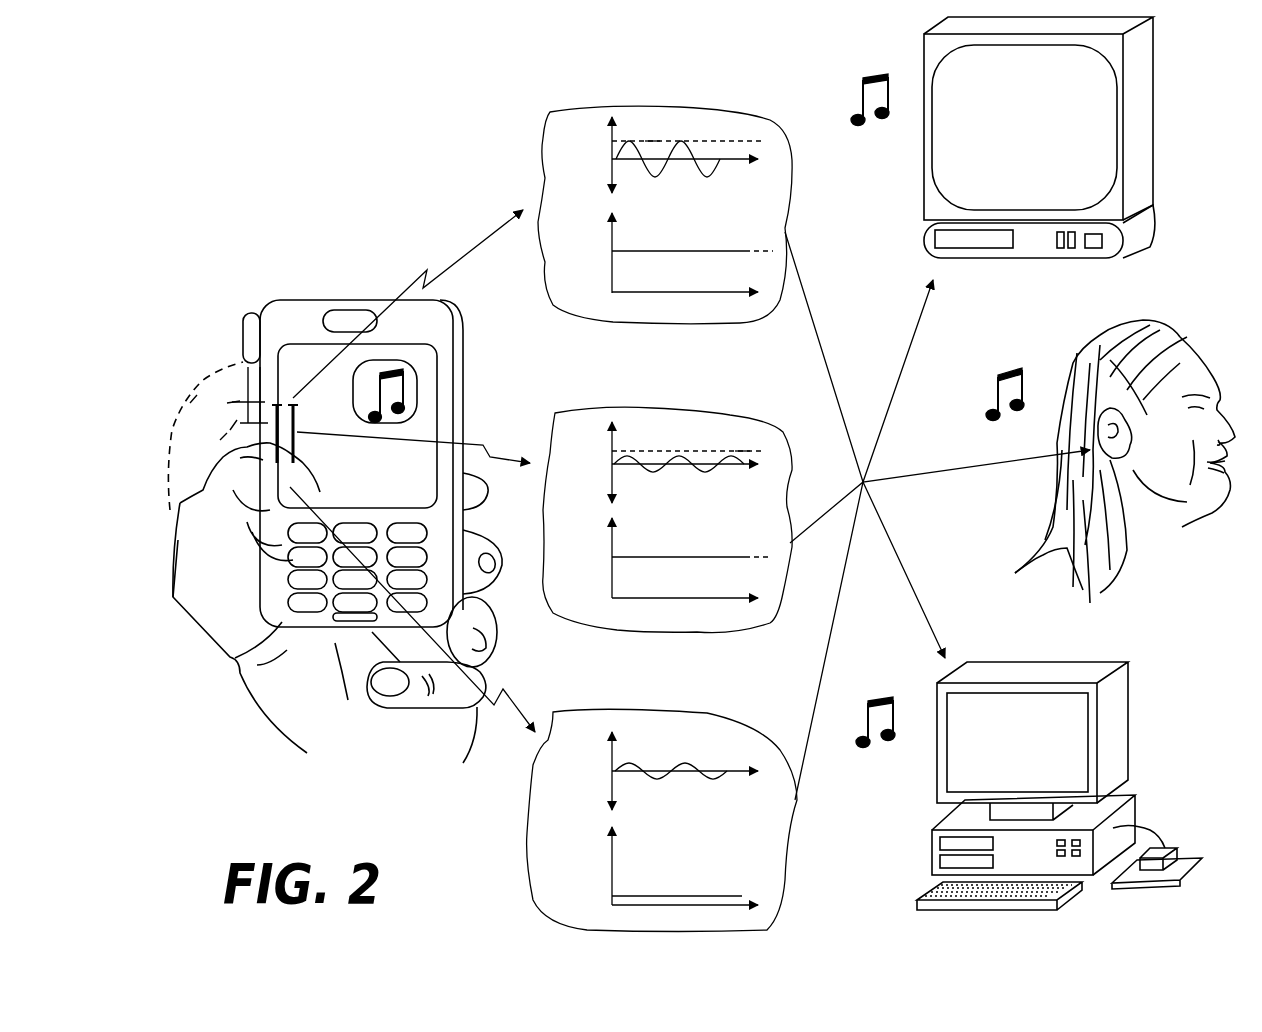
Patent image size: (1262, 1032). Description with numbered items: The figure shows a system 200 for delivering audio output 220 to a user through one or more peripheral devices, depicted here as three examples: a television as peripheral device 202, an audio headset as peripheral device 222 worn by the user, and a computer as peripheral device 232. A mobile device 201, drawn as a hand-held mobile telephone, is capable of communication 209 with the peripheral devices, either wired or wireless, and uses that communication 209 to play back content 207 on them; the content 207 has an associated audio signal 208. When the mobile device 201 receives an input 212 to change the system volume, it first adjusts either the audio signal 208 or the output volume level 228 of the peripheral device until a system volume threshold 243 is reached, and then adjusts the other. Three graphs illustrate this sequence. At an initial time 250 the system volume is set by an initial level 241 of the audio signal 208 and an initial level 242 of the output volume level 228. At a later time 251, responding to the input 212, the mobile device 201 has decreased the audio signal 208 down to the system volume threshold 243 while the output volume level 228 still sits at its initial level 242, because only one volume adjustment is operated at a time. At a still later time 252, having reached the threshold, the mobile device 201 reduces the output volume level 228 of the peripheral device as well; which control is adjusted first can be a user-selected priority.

The system 200 is at (385, 206).
The mobile device 201 is at (307, 307).
The peripheral device 202 is at (1125, 122).
The content 207 is at (372, 387).
The audio signal 208 is at (690, 140).
The communication 209 is at (450, 265).
The input 212 is at (305, 440).
The audio output 220 is at (855, 130).
The peripheral device 222 is at (1135, 447).
The output volume level 228 is at (675, 251).
The peripheral device 232 is at (1102, 723).
The initial level 241 is at (652, 140).
The initial level 242 is at (760, 250).
The system volume threshold 243 is at (742, 452).
The initial time 250 is at (612, 106).
The later time 251 is at (637, 409).
The still later time 252 is at (603, 710).